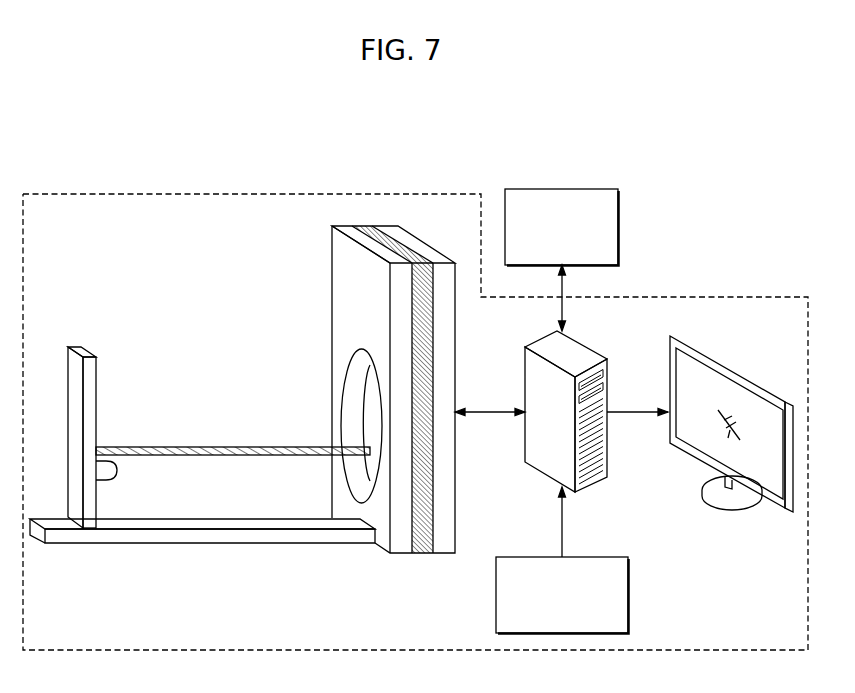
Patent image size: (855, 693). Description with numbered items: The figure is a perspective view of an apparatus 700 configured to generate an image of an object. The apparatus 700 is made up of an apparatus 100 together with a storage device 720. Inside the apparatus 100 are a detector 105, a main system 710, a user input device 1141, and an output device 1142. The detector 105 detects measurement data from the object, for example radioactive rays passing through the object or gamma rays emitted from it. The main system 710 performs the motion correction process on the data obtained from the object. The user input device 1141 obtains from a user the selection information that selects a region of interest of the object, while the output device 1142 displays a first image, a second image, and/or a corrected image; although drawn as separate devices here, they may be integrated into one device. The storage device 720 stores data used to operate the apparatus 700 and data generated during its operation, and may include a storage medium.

The apparatus 700 is at (688, 136).
The apparatus 100 is at (733, 297).
The detector 105 is at (400, 225).
The storage device 720 is at (588, 187).
The main system 710 is at (595, 345).
The output device 1142 is at (735, 370).
The user input device 1141 is at (598, 555).